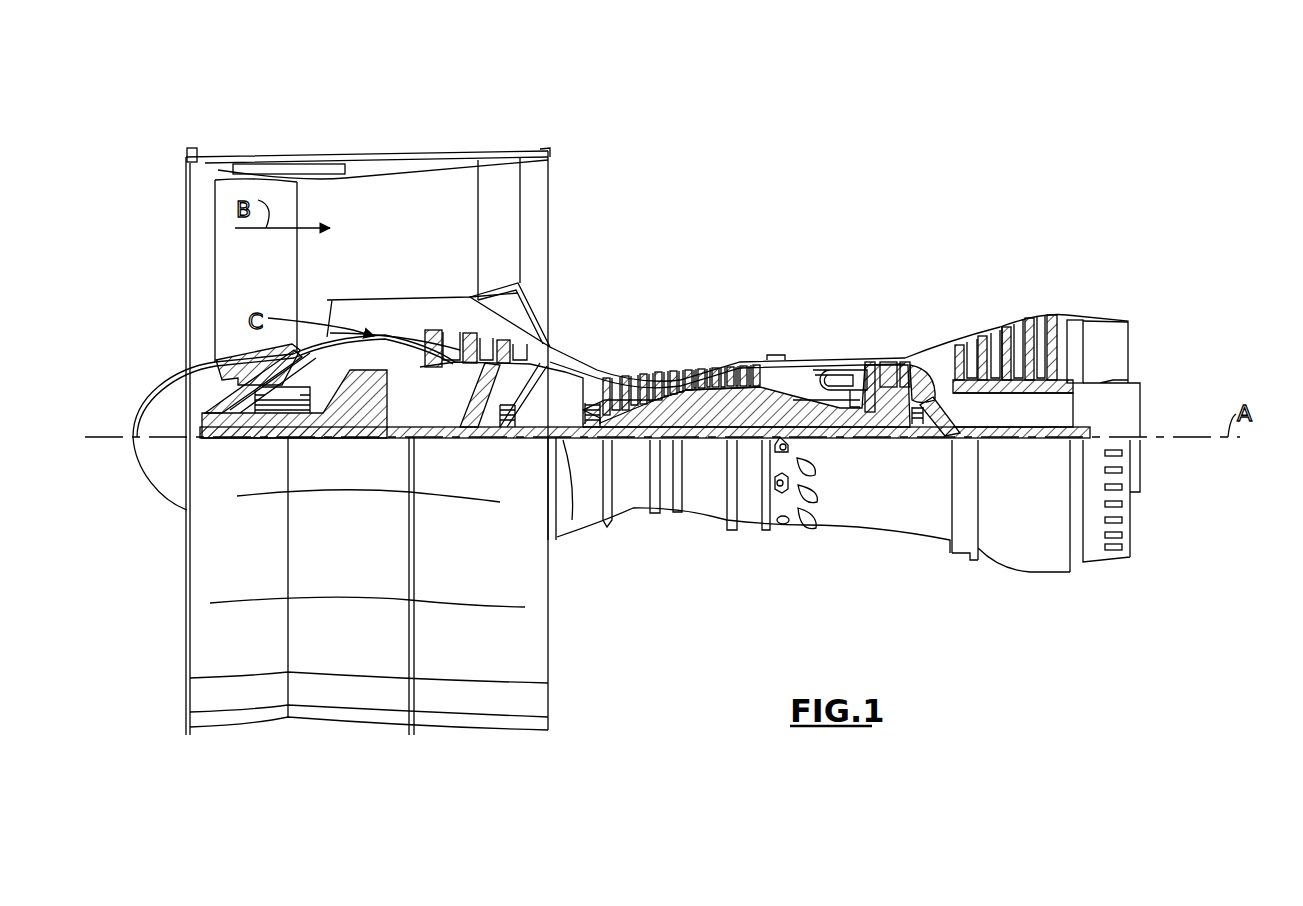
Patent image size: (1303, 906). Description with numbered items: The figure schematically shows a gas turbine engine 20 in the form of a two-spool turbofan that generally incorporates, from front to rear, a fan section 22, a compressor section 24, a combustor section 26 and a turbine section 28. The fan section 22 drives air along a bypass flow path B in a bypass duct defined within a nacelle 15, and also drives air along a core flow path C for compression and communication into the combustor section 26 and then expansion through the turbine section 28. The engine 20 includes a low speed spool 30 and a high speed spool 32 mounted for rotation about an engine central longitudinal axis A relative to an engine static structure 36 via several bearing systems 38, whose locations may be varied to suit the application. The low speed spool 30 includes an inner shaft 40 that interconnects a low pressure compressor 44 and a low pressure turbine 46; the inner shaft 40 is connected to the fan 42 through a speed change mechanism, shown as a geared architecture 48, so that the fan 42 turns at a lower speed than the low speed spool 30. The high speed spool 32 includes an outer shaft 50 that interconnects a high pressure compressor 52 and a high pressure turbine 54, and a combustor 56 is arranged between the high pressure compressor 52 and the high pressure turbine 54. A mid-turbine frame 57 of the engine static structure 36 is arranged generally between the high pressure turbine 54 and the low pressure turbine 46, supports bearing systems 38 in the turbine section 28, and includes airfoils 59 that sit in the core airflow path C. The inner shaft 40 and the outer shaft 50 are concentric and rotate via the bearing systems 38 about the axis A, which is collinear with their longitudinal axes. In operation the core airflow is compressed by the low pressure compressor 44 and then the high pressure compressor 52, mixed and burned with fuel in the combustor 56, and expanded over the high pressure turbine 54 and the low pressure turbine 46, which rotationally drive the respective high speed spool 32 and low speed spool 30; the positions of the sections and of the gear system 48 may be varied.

The nacelle 15 is at (370, 158).
The gas turbine engine 20 is at (830, 203).
The fan section 22 is at (298, 147).
The compressor section 24 is at (600, 344).
The combustor section 26 is at (835, 342).
The turbine section 28 is at (1046, 336).
The low speed spool 30 is at (708, 443).
The high speed spool 32 is at (750, 400).
The engine static structure 36 is at (748, 527).
The bearing systems 38 is at (508, 440).
The inner shaft 40 is at (567, 440).
The fan 42 is at (270, 283).
The low pressure compressor 44 is at (470, 343).
The low pressure turbine 46 is at (1017, 328).
The geared architecture 48 is at (375, 420).
The outer shaft 50 is at (835, 425).
The high pressure compressor 52 is at (680, 400).
The high pressure turbine 54 is at (893, 360).
The combustor 56 is at (823, 378).
The mid-turbine frame 57 is at (930, 348).
The airfoils 59 is at (950, 403).